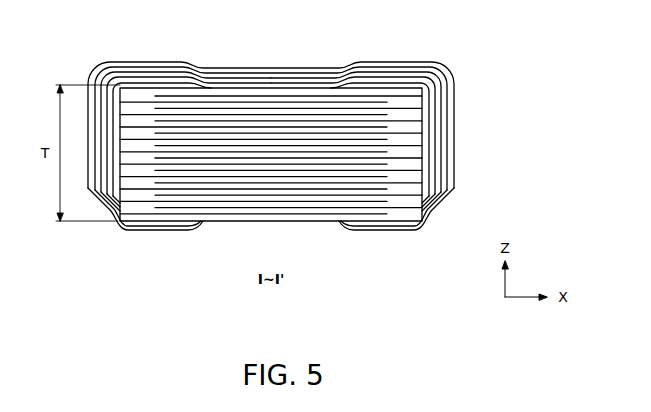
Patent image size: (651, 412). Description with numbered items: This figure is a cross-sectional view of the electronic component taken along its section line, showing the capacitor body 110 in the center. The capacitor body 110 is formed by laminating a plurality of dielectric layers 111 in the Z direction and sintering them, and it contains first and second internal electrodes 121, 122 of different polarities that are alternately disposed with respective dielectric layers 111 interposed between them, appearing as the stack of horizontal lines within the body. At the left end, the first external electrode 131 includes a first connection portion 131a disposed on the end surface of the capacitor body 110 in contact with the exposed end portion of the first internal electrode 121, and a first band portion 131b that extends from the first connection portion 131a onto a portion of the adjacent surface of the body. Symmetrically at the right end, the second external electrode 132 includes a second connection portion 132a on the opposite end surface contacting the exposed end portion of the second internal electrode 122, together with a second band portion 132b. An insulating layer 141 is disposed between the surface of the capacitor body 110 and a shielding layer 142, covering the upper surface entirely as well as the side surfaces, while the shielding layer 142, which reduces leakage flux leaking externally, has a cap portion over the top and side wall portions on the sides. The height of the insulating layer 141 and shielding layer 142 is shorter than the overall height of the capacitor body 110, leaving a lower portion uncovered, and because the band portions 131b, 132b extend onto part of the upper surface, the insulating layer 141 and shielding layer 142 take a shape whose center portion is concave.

The capacitor body 110 is at (311, 145).
The dielectric layer 111 is at (436, 99).
The first internal electrode 121 is at (160, 102).
The second internal electrode 122 is at (208, 108).
The first external electrode 131 is at (171, 180).
The first connection portion 131a is at (97, 227).
The first band portion 131b is at (146, 230).
The second external electrode 132 is at (370, 180).
The second connection portion 132a is at (444, 227).
The second band portion 132b is at (393, 230).
The insulating layer 141 is at (410, 62).
The shielding layer 142 is at (369, 67).